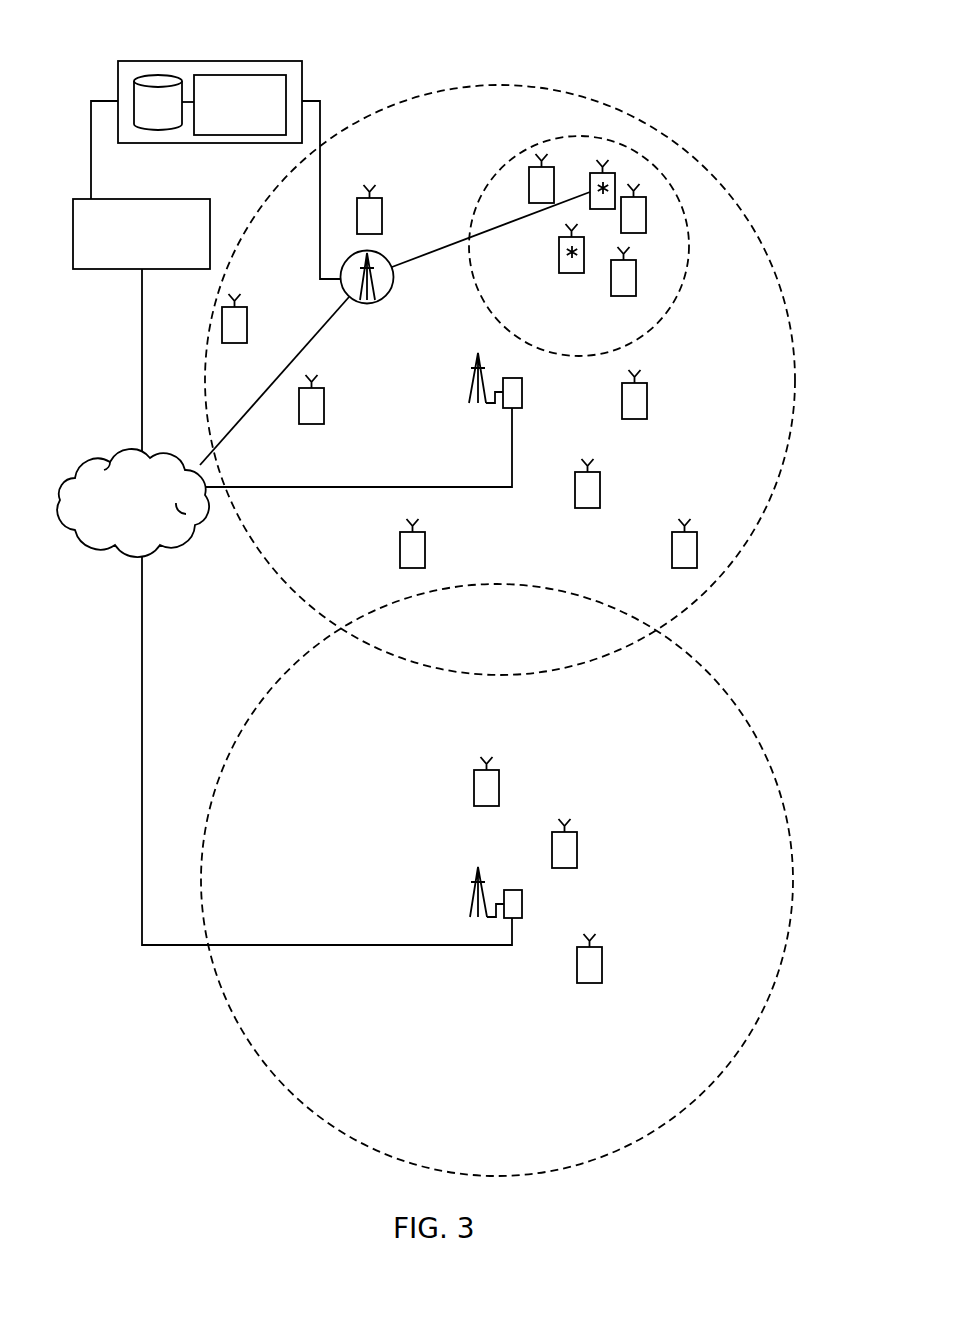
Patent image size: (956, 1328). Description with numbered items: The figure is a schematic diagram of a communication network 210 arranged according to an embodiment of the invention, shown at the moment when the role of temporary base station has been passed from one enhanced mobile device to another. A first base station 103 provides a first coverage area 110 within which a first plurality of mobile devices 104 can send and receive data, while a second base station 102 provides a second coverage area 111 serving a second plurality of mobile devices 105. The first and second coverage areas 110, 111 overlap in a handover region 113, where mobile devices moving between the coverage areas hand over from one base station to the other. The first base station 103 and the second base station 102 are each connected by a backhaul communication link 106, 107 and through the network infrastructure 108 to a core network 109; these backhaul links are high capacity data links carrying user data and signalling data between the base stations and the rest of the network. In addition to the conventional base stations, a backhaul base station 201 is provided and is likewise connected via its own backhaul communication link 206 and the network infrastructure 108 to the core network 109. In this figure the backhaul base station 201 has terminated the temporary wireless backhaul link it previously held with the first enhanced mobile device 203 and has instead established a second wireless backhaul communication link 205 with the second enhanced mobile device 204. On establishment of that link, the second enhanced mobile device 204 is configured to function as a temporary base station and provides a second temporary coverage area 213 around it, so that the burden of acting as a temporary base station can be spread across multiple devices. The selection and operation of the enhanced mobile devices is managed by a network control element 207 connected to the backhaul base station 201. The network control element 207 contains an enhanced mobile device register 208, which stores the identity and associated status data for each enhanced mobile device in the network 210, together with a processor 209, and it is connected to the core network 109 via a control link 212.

The second base station 102 is at (470, 400).
The first base station 103 is at (470, 900).
The mobile devices 104 is at (499, 785).
The mobile devices 105 is at (382, 212).
The backhaul communication link 106 is at (318, 945).
The backhaul communication link 107 is at (318, 487).
The network infrastructure 108 is at (93, 458).
The core network 109 is at (165, 199).
The first coverage area 110 is at (738, 710).
The second coverage area 111 is at (742, 211).
The handover region 113 is at (585, 635).
The backhaul base station 201 is at (367, 303).
The enhanced mobile device 203 is at (563, 273).
The second enhanced mobile device 204 is at (590, 175).
The second wireless backhaul communication link 205 is at (423, 256).
The backhaul communication link 206 is at (240, 420).
The network control element 207 is at (302, 80).
The enhanced mobile device register 208 is at (158, 75).
The processor 209 is at (252, 75).
The communication network 210 is at (813, 93).
The control link 212 is at (91, 100).
The second temporary coverage area 213 is at (578, 357).